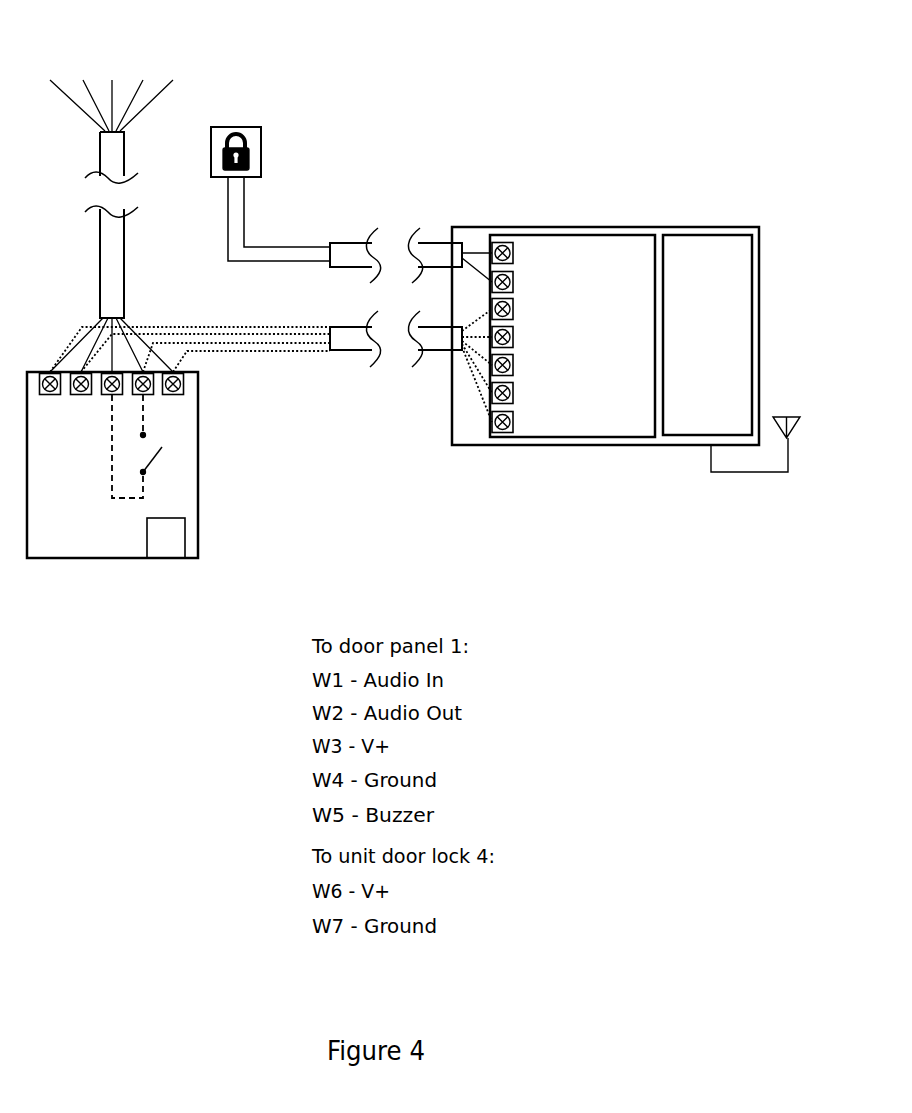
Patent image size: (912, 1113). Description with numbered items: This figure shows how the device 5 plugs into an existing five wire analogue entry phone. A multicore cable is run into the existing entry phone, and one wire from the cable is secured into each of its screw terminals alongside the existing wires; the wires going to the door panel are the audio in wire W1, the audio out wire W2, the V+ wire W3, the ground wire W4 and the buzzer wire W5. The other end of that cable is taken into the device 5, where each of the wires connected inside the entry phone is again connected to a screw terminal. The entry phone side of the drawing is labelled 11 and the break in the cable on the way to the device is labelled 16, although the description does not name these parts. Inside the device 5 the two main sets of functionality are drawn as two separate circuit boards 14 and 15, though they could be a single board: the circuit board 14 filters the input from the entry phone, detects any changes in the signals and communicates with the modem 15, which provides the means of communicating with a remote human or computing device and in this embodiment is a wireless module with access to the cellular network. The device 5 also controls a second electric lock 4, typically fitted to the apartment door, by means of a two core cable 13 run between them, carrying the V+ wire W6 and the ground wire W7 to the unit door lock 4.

The second electric lock 4 is at (258, 127).
The device 5 is at (481, 245).
The door panel interface unit 11 is at (192, 504).
The two core cable 13 is at (355, 243).
The circuit board 14 is at (594, 245).
The modem 15 is at (718, 245).
The second cable connector 16 is at (355, 340).
The audio in wire W1 is at (61, 214).
The audio out wire W2 is at (83, 214).
The V+ wire W3 is at (113, 214).
The ground wire W4 is at (142, 214).
The buzzer wire W5 is at (164, 214).
The V+ wire W6 is at (246, 232).
The ground wire W7 is at (224, 256).